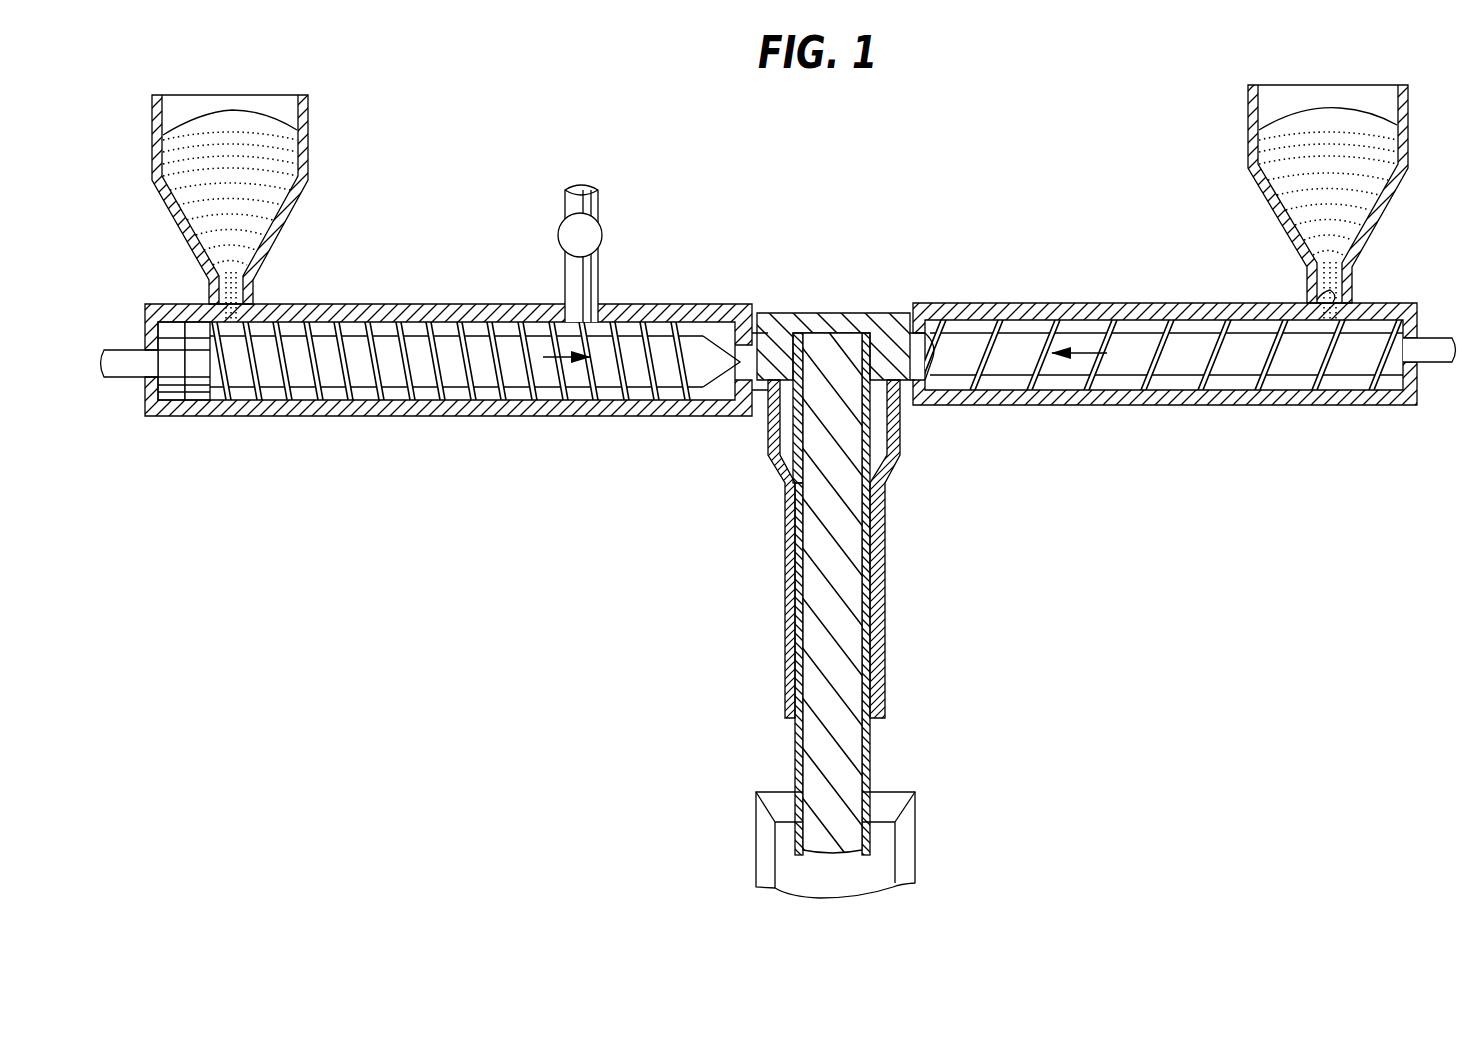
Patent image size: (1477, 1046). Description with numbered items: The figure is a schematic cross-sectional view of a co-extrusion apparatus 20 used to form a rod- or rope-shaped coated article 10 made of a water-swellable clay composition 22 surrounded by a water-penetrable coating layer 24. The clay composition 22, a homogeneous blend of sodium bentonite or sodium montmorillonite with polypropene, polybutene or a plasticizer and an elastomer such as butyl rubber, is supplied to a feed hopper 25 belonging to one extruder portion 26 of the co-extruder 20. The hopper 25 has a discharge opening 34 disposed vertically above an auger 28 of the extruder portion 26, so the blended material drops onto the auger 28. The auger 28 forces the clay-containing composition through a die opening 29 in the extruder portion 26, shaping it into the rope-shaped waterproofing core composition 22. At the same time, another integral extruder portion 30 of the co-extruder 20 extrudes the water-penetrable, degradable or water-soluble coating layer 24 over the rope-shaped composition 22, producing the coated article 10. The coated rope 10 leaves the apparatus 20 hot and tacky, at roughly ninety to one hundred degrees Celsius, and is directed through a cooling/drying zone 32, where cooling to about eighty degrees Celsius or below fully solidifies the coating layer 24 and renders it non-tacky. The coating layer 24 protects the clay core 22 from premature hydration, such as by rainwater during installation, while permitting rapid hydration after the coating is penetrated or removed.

The coated article 10 is at (765, 768).
The co-extrusion apparatus 20 is at (709, 270).
The water-swellable clay composition 22 is at (1370, 160).
The water-penetrable coating layer 24 is at (270, 160).
The feed hopper 25 is at (1250, 130).
The extruder portion 26 is at (1218, 294).
The auger 28 is at (1088, 350).
The die opening 29 is at (933, 332).
The integral extruder portion 30 is at (425, 292).
The cooling/drying zone 32 is at (888, 847).
The discharge opening 34 is at (1333, 290).